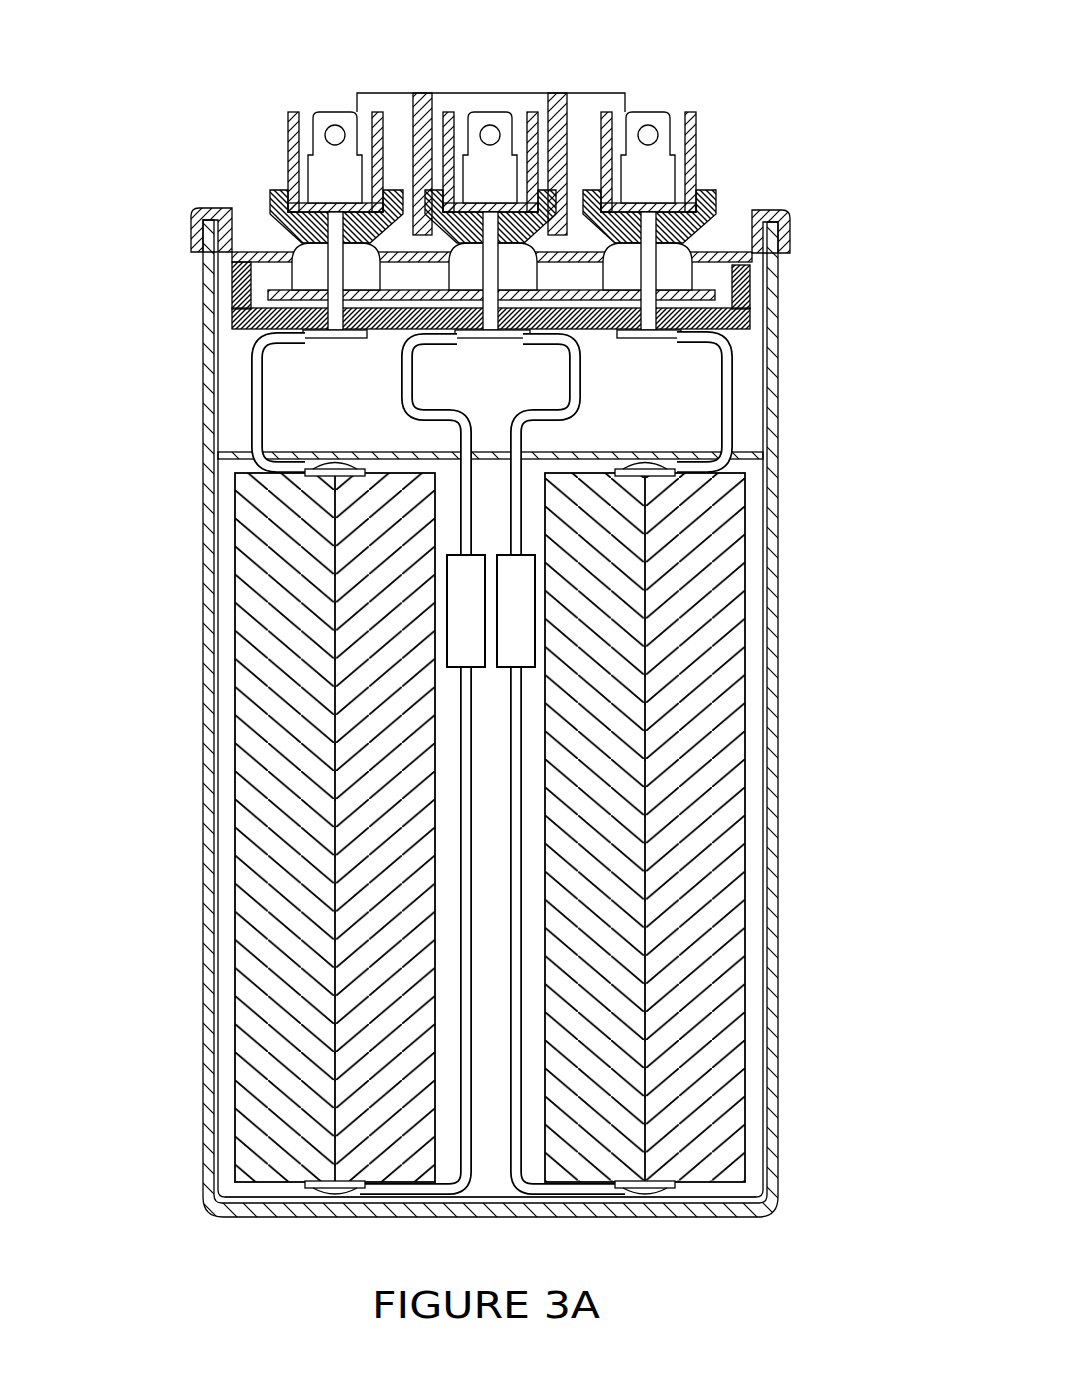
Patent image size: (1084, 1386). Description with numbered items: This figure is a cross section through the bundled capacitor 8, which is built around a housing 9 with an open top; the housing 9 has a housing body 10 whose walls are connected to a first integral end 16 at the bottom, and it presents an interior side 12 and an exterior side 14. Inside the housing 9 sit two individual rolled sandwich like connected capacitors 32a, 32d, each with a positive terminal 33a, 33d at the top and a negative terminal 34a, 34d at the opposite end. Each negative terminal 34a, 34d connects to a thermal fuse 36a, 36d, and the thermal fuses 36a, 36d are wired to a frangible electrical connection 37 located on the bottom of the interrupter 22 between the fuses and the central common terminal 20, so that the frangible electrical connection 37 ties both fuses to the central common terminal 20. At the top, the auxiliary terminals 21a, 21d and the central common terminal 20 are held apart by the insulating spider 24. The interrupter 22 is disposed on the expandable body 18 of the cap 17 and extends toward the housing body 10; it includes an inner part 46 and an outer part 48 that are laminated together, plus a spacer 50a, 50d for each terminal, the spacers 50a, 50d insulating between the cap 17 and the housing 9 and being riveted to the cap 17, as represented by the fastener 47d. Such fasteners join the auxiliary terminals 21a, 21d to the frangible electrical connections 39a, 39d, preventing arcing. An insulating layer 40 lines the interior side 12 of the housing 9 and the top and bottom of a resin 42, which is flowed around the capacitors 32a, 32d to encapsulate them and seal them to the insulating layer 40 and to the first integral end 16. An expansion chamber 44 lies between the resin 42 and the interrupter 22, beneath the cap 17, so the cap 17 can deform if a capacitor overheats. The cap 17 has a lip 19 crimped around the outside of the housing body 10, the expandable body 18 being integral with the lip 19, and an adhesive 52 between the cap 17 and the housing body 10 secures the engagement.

The bundled capacitor 8 is at (740, 58).
The housing 9 is at (160, 667).
The housing body 10 is at (779, 378).
The interior side 12 is at (728, 362).
The exterior side 14 is at (216, 472).
The first integral end 16 is at (488, 1217).
The cap 17 is at (735, 250).
The expandable body 18 is at (302, 264).
The lip 19 is at (790, 230).
The central common terminal 20 is at (490, 114).
The auxiliary terminal 21a is at (280, 186).
The auxiliary terminal 21d is at (698, 185).
The interrupter 22 is at (752, 306).
The insulating spider 24 is at (557, 100).
The individual rolled sandwich like connected capacitor 32a is at (320, 808).
The individual rolled sandwich like connected capacitor 32d is at (680, 808).
The positive terminal 33a is at (335, 470).
The positive terminal 33d is at (645, 470).
The negative terminal 34a is at (335, 1192).
The negative terminal 34d is at (645, 1192).
The thermal fuse 36a is at (457, 613).
The thermal fuse 36d is at (525, 613).
The frangible electrical connection 37 is at (492, 342).
The frangible electrical connection 39a is at (330, 343).
The frangible electrical connection 39d is at (648, 343).
The insulating layer 40 is at (216, 400).
The resin 42 is at (760, 492).
The expansion chamber 44 is at (240, 358).
The inner part 46 is at (332, 272).
The fastener 47d is at (748, 279).
The outer part 48 is at (240, 290).
The spacer 50a is at (275, 240).
The spacer 50d is at (674, 262).
The adhesive 52 is at (196, 231).